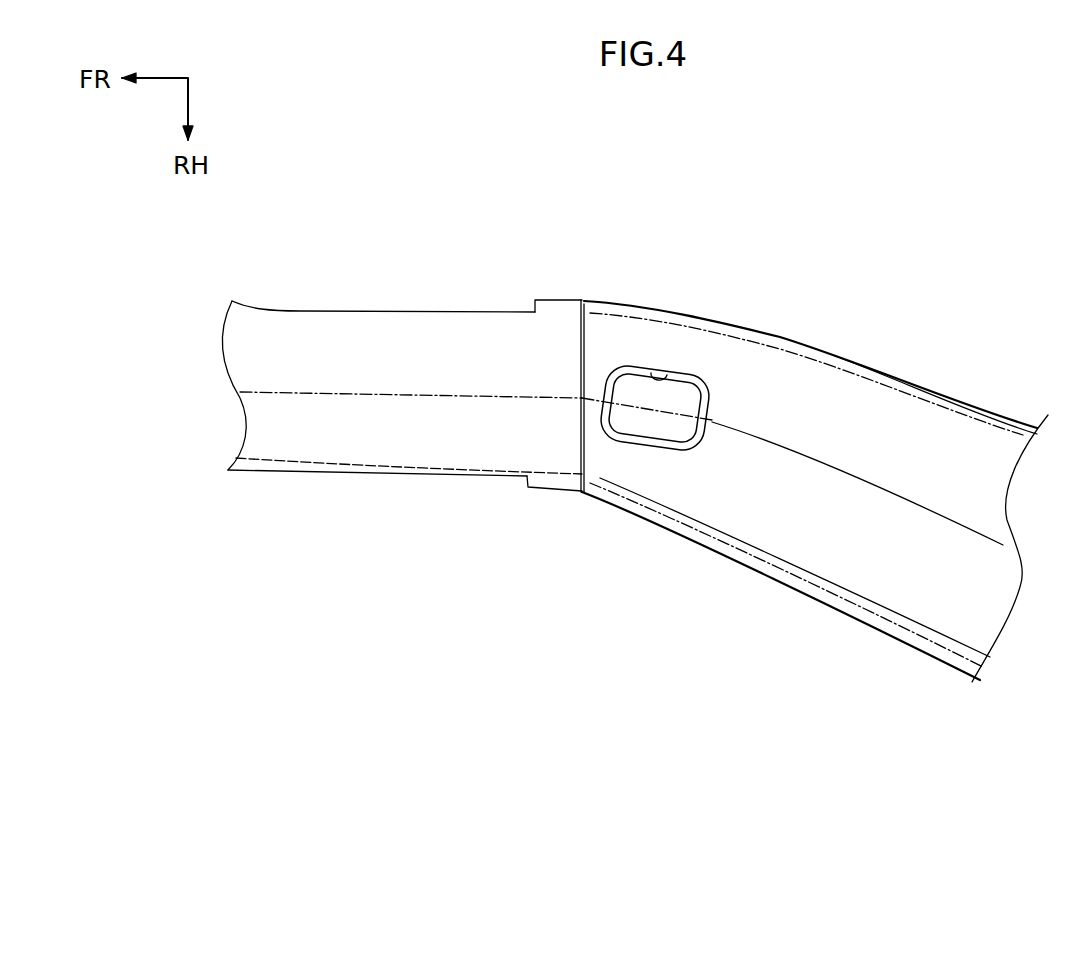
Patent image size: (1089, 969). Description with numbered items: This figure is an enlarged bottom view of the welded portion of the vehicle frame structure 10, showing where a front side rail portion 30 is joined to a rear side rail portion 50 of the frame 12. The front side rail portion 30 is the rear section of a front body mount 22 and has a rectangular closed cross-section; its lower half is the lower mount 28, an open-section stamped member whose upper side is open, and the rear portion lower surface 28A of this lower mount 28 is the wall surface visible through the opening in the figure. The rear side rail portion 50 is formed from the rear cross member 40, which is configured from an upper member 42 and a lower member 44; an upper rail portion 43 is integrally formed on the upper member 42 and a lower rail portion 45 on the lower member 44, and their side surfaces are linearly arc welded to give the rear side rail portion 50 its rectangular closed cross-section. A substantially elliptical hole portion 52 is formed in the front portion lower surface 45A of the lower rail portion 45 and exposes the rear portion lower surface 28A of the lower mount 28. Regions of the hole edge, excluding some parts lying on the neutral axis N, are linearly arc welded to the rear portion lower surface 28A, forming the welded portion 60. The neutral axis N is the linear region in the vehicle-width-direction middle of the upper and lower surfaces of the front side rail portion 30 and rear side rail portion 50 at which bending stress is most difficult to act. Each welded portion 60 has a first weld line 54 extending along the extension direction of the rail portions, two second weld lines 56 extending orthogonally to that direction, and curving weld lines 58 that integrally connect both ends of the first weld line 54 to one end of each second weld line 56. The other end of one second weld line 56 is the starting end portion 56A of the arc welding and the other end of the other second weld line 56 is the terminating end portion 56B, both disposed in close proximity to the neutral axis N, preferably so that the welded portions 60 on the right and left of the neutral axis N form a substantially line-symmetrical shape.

The vehicle framework structure 10 is at (538, 504).
The rear side member 12 is at (832, 478).
The front body mount 22 is at (402, 343).
The lower mount 28 is at (305, 327).
The rear portion lower surface 28A is at (633, 422).
The front side rail portion 30 is at (417, 309).
The rear cross member 40 is at (942, 661).
The upper member 42 is at (522, 251).
The upper rail portion 43 is at (533, 300).
The lower member 44 is at (951, 374).
The lower rail portion 45 is at (942, 435).
The front portion lower surface 45A is at (660, 463).
The rear side rail portion 50 is at (779, 339).
The hole portion 52 is at (666, 370).
The first weld line 54 is at (693, 367).
The second weld line 56 is at (581, 368).
The starting end portion 56A is at (581, 396).
The terminating end portion 56B is at (720, 426).
The curving weld line 58 is at (603, 372).
The welded portion 60 is at (639, 363).
The neutral axis N is at (983, 533).